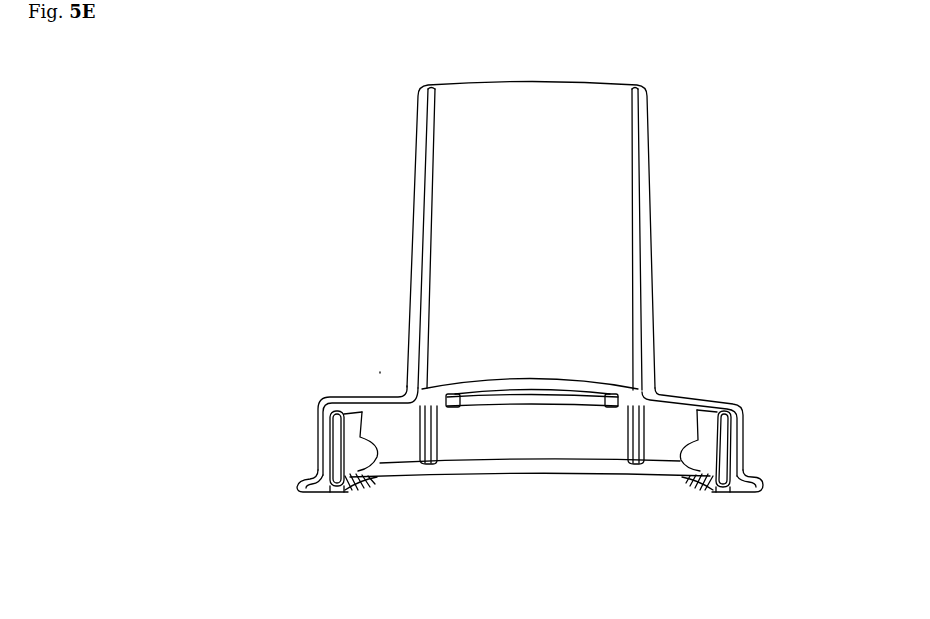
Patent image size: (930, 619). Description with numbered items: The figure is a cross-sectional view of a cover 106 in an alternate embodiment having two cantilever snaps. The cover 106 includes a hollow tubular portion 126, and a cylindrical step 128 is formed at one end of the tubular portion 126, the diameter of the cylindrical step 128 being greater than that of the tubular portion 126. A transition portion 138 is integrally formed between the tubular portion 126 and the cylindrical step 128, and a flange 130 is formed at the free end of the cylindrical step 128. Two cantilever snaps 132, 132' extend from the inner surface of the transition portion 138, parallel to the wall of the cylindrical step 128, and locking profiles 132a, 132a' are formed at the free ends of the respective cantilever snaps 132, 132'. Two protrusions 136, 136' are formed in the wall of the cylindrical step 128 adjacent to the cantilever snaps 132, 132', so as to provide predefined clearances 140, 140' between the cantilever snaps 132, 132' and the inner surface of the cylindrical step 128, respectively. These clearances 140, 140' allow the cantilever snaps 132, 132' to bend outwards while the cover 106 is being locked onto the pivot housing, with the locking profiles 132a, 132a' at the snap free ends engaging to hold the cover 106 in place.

The cover 106 is at (272, 174).
The tubular portion 126 is at (650, 102).
The cylindrical step 128 is at (293, 408).
The flange 130 is at (293, 490).
The cantilever snap 132 is at (746, 440).
The cantilever snap 132' is at (291, 441).
The locking profile 132a is at (640, 480).
The locking profile 132a' is at (401, 505).
The protrusion 136 is at (756, 414).
The protrusion 136' is at (287, 402).
The transition portion 138 is at (393, 390).
The clearance 140 is at (749, 504).
The clearance 140' is at (332, 506).